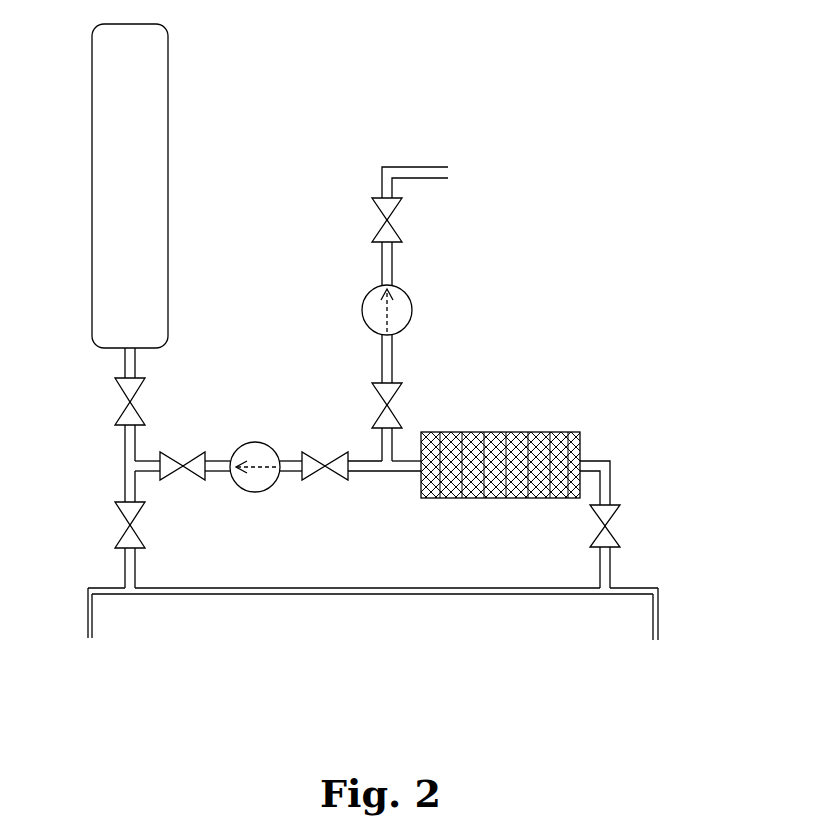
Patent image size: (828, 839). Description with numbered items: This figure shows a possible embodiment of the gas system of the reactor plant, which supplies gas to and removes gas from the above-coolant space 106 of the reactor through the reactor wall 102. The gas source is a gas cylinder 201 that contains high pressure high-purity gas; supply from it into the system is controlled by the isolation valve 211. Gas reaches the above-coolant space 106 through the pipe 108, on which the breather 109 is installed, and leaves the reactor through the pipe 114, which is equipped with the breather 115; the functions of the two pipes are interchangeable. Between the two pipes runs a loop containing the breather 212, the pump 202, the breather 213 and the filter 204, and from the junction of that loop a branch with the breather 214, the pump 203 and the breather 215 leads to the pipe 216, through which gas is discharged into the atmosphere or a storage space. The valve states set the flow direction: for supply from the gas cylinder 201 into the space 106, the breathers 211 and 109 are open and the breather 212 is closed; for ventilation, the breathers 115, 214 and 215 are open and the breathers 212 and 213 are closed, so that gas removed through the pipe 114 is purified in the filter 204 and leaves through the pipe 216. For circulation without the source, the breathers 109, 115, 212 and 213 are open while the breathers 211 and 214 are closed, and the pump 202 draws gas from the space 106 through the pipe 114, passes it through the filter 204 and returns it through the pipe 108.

The gas cylinder 201 is at (97, 186).
The isolation valve 211 is at (86, 383).
The breather 212 is at (185, 421).
The pump 202 is at (255, 426).
The breather 213 is at (324, 420).
The breather 214 is at (446, 372).
The pump 203 is at (442, 286).
The breather 215 is at (351, 203).
The pipe 216 is at (374, 158).
The filter 204 is at (520, 430).
The breather 115 is at (651, 505).
The pipe 114 is at (656, 549).
The breather 109 is at (86, 505).
The pipe 108 is at (81, 545).
The wall 102 is at (126, 641).
The above-coolant space 106 is at (373, 640).